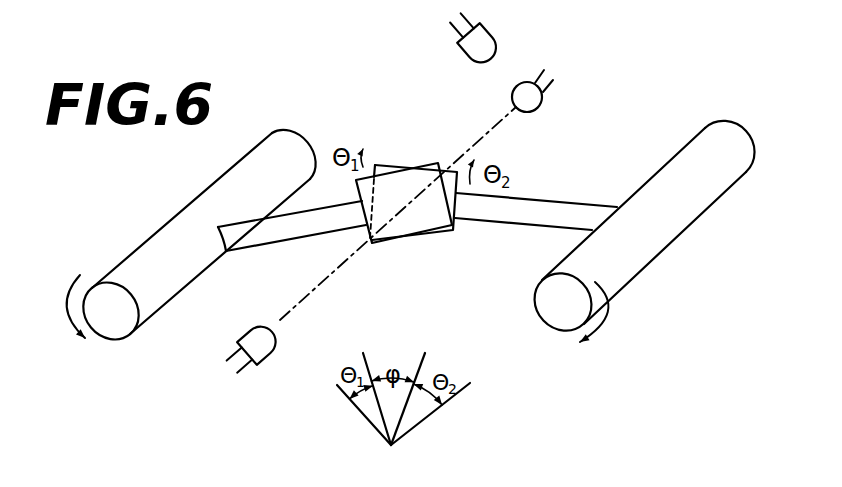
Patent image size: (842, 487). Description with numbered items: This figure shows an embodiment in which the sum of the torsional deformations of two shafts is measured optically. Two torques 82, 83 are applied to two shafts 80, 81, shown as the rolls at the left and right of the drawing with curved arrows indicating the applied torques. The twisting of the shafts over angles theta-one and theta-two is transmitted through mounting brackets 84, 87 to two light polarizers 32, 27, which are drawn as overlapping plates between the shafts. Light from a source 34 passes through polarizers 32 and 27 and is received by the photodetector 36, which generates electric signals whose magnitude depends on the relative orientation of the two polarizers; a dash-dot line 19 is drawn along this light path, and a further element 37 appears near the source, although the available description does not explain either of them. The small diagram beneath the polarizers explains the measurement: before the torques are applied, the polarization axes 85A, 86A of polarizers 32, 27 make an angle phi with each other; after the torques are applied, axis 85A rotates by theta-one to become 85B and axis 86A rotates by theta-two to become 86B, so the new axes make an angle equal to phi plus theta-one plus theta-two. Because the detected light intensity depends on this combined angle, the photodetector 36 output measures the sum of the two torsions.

The optical axis 19 is at (408, 213).
The polarizer 27 is at (433, 212).
The polarizer 32 is at (381, 216).
The source 34 is at (556, 92).
The photodetector 36 is at (232, 348).
The photodetector 37 is at (492, 38).
The shaft 80 is at (194, 240).
The shaft 81 is at (639, 231).
The torque 82 is at (51, 306).
The torque 83 is at (618, 312).
The mounting bracket 84 is at (292, 226).
The mounting bracket 87 is at (536, 213).
The polarization axis 85A is at (357, 387).
The polarization axis 85B is at (332, 407).
The polarization axis 86A is at (422, 383).
The polarization axis 86B is at (465, 405).